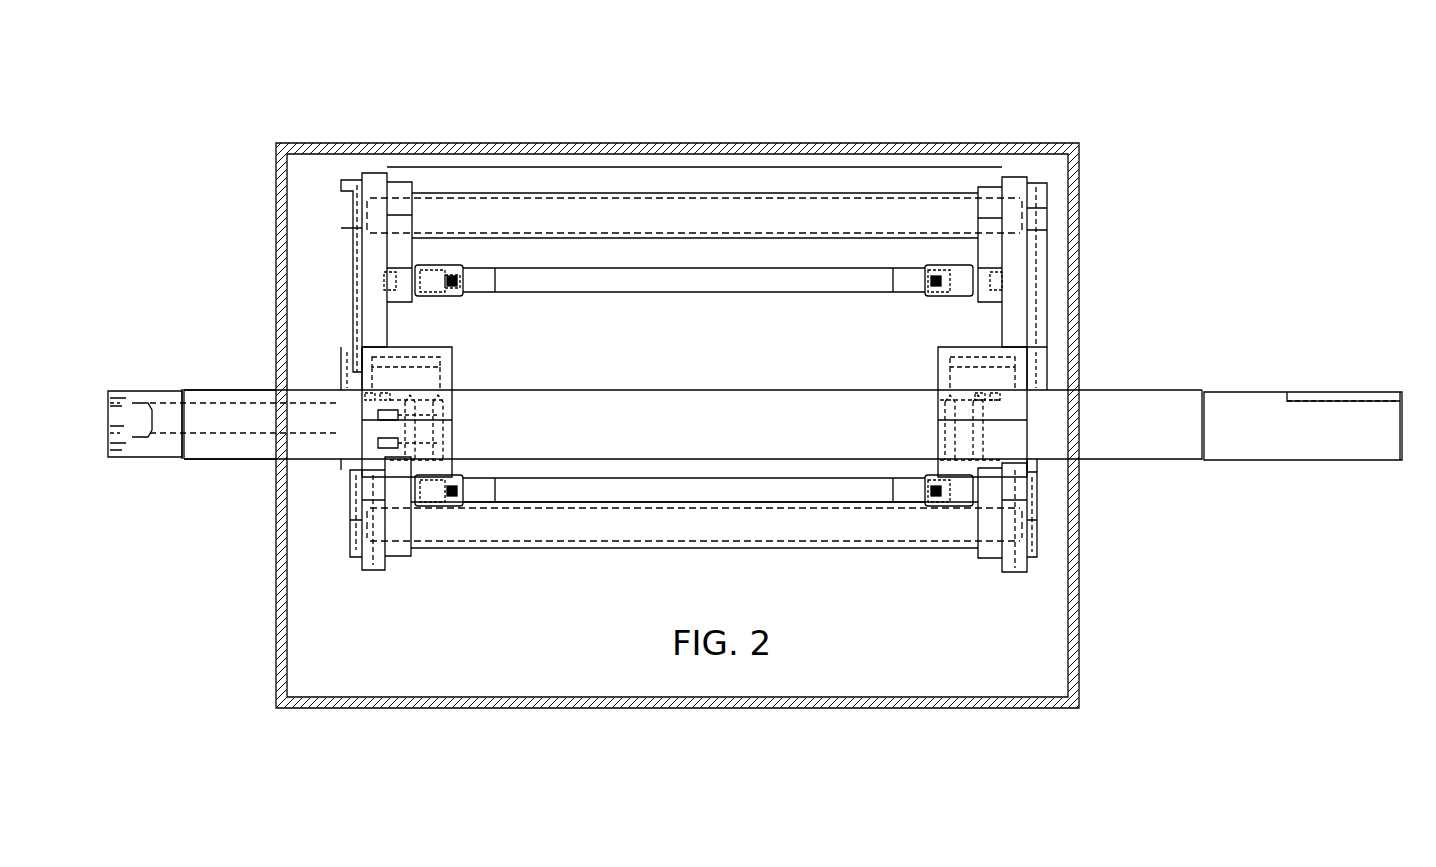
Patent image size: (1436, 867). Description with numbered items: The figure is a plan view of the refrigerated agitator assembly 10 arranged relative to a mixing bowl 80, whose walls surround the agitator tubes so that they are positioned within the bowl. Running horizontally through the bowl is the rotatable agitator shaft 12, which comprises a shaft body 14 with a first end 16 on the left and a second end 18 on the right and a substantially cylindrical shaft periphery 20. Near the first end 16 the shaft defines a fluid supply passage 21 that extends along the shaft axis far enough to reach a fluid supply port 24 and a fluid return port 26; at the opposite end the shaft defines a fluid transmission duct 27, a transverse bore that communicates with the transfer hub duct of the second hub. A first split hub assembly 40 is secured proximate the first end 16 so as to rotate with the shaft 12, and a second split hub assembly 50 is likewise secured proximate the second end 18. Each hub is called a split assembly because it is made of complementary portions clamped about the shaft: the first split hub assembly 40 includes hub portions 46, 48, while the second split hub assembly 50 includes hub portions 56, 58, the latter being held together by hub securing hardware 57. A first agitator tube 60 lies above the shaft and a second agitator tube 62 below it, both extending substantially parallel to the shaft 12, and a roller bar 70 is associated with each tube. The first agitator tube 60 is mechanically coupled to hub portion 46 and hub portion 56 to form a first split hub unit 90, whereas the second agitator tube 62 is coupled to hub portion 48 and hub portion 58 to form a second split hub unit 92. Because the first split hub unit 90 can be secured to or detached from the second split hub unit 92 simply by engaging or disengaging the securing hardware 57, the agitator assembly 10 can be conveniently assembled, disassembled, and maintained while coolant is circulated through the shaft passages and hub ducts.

The refrigerated agitator assembly 10 is at (1118, 98).
The rotatable agitator shaft 12 is at (1209, 390).
The shaft body 14 is at (1265, 394).
The first end 16 is at (110, 464).
The second end 18 is at (1402, 464).
The shaft periphery 20 is at (1286, 460).
The fluid supply passage 21 is at (214, 411).
The fluid supply port 24 is at (458, 442).
The fluid return port 26 is at (336, 378).
The fluid transmission duct 27 is at (922, 382).
The first split hub assembly 40 is at (440, 440).
The first complementary hub portion of the first set 46 is at (452, 348).
The second complementary hub portion of the first set 48 is at (454, 450).
The second split hub assembly 50 is at (925, 437).
The first complementary hub portion of the second set 56 is at (940, 348).
The hub securing hardware 57 is at (450, 410).
The second complementary hub portion of the second set 58 is at (942, 442).
The first agitator tube 60 is at (586, 200).
The second agitator tube 62 is at (576, 544).
The roller bar 70 is at (682, 294).
The mixing bowl 80 is at (1083, 152).
The first split hub unit 90 is at (788, 236).
The second split hub unit 92 is at (785, 549).